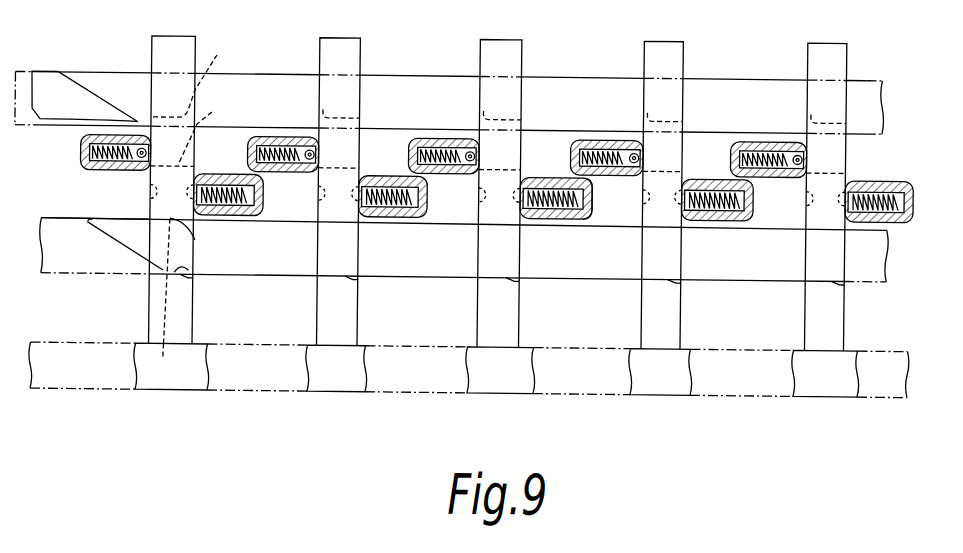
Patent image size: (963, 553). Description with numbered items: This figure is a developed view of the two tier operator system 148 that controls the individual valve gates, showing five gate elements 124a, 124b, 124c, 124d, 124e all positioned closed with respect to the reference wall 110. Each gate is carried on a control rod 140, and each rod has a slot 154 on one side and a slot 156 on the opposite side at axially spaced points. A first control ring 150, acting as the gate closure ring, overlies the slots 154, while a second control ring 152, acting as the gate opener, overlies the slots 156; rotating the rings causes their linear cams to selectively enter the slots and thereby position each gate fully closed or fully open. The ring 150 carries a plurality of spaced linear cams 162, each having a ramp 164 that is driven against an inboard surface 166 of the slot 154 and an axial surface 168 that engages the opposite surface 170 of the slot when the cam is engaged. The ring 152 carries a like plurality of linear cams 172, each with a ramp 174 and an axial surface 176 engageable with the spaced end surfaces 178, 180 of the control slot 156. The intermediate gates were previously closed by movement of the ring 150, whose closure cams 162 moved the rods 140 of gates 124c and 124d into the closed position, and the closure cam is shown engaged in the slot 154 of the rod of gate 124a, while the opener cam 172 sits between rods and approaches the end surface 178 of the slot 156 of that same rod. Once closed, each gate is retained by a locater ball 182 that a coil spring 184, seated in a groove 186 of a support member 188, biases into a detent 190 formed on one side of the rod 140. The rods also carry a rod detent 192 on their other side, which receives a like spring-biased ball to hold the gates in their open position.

The reference wall 110 is at (410, 383).
The gate element 124a is at (184, 376).
The gate element 124b is at (347, 372).
The gate element 124c is at (522, 353).
The gate element 124d is at (675, 380).
The gate element 124e is at (839, 381).
The control rod 140 is at (499, 105).
The two tier operator system 148 is at (621, 62).
The first control ring 150 is at (392, 239).
The second control ring 152 is at (413, 114).
The slot 154 is at (162, 358).
The slot 156 is at (259, 153).
The linear cam 162 is at (138, 249).
The ramp 164 is at (100, 242).
The inboard surface 166 is at (189, 273).
The axial surface 168 is at (117, 219).
The opposite surface 170 is at (195, 243).
The linear cam 172 is at (69, 94).
The ramp 174 is at (121, 114).
The axial surface 176 is at (72, 132).
The end surface 178 is at (202, 72).
The end surface 180 is at (212, 130).
The locater ball 182 is at (527, 180).
The coil spring 184 is at (538, 202).
The groove 186 is at (553, 184).
The support member 188 is at (587, 204).
The detent 190 is at (513, 218).
The rod detent 192 is at (313, 189).